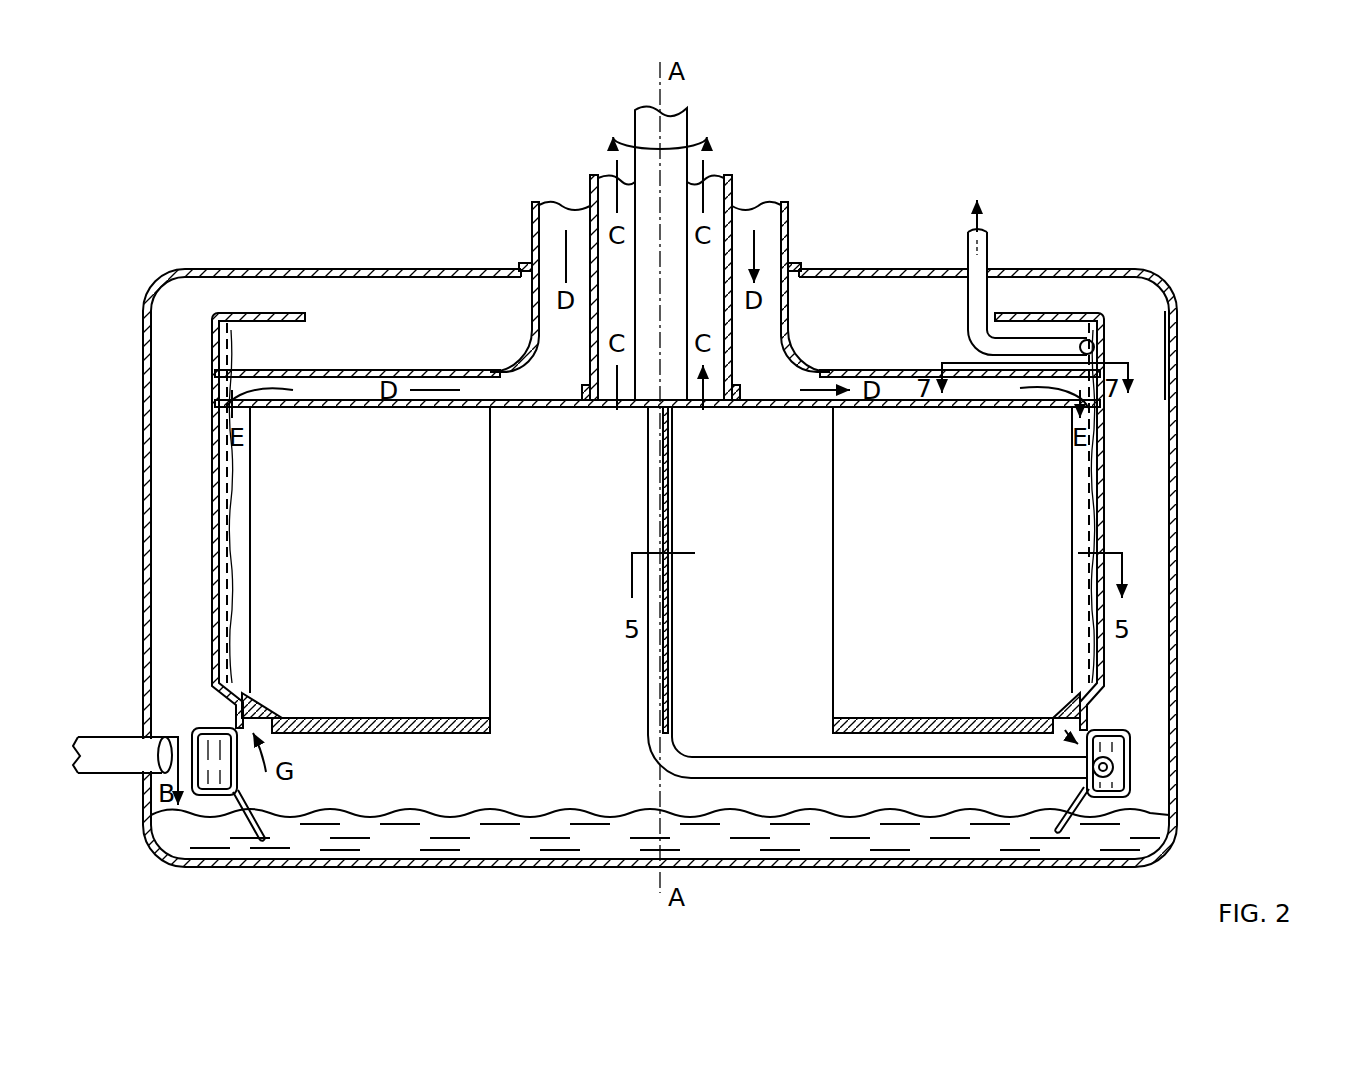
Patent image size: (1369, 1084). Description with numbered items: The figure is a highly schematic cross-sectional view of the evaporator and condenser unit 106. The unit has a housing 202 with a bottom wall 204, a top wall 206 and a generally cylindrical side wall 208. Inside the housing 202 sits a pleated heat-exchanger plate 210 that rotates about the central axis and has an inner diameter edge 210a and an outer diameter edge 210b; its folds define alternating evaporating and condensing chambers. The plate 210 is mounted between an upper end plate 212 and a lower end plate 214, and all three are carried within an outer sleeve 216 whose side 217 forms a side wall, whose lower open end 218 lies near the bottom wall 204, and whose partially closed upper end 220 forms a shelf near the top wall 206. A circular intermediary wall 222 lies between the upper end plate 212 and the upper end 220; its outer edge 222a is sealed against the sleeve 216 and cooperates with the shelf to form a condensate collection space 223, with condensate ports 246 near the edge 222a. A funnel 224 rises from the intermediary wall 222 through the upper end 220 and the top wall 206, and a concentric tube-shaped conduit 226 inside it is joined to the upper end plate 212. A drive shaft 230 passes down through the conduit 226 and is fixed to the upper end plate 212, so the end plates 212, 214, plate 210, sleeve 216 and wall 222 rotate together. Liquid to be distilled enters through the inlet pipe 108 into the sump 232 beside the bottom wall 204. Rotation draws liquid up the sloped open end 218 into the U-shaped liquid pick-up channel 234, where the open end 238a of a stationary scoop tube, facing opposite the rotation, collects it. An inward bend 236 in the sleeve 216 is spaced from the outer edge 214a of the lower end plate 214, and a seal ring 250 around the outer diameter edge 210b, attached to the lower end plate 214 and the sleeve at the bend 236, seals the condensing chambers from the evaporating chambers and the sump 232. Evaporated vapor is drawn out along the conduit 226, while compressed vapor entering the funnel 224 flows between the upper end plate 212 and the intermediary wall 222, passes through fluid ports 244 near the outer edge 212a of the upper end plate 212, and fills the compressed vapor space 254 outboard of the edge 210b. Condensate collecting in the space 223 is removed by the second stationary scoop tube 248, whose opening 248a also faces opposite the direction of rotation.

The evaporator and condenser unit 106 is at (1020, 135).
The inlet pipe 108 is at (126, 775).
The housing 202 is at (1164, 284).
The bottom wall 204 is at (660, 860).
The top wall 206 is at (290, 270).
The side wall 208 is at (1172, 658).
The heat-exchanger plate 210 is at (390, 543).
The inner diameter edge 210a is at (491, 548).
The outer diameter edge 210b is at (248, 577).
The upper end plate 212 is at (316, 407).
The outer edge of upper end plate 212a is at (1100, 400).
The lower end plate 214 is at (390, 735).
The outer edge of lower end plate 214a is at (1060, 708).
The outer sleeve 216 is at (1108, 464).
The side of sleeve 217 is at (1105, 522).
The lower open end 218 is at (243, 806).
The upper end of sleeve 220 is at (306, 320).
The intermediary wall 222 is at (310, 372).
The outer edge of intermediary wall 222a is at (213, 383).
The condensate collection space 223 is at (233, 352).
The funnel 224 is at (788, 224).
The tube-shaped conduit 226 is at (734, 192).
The drive shaft 230 is at (684, 118).
The sump 232 is at (198, 838).
The liquid pick-up channel 234 is at (1127, 757).
The inward bend 236 is at (1088, 717).
The open end of first stationary scoop tube 238a is at (1110, 776).
The fluid ports 244 is at (1105, 412).
The condensate ports 246 is at (1100, 358).
The second stationary scoop tube 248 is at (968, 250).
The opening of second stationary scoop tube 248a is at (1087, 326).
The seal ring 250 is at (256, 700).
The compressed vapor space 254 is at (240, 512).